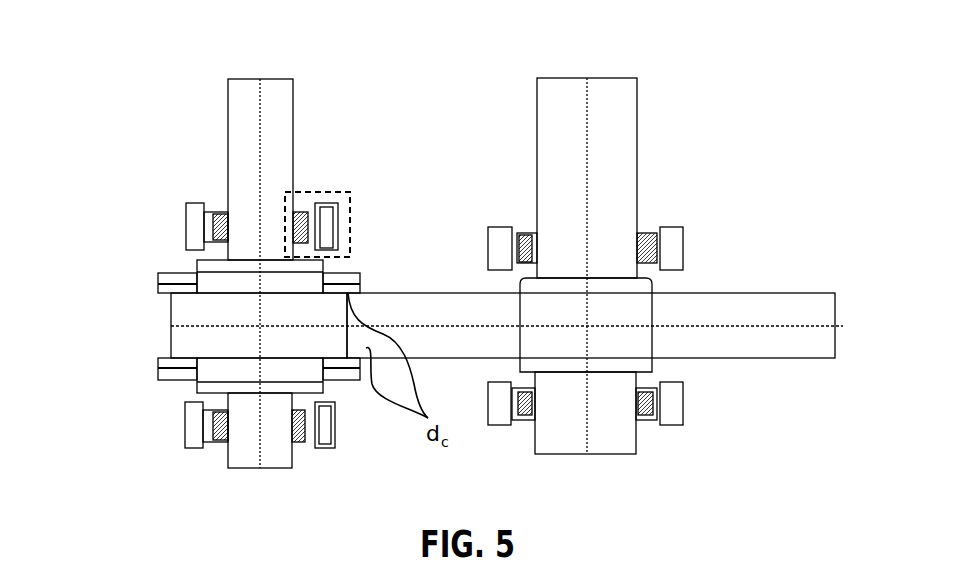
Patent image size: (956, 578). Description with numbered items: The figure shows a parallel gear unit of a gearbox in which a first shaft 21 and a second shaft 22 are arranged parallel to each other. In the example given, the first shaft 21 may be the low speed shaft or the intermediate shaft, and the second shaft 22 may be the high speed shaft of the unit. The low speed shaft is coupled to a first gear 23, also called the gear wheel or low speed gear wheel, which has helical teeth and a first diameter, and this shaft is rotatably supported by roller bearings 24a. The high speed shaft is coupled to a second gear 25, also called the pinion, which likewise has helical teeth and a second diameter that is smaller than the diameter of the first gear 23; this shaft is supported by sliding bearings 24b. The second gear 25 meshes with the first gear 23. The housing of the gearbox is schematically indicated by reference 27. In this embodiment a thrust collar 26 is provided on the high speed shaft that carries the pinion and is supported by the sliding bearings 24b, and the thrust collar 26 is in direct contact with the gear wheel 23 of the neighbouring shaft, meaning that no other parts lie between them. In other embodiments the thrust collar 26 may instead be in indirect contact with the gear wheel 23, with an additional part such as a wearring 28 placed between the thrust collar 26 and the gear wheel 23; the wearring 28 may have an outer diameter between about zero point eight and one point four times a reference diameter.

The first shaft 21 is at (617, 120).
The second shaft 22 is at (270, 120).
The first gear 23 is at (404, 308).
The roller bearings 24a is at (648, 240).
The sliding bearings 24b is at (300, 238).
The second gear 25 is at (173, 325).
The thrust collar 26 is at (345, 283).
The housing 27 is at (187, 228).
The wearring 28 is at (160, 287).